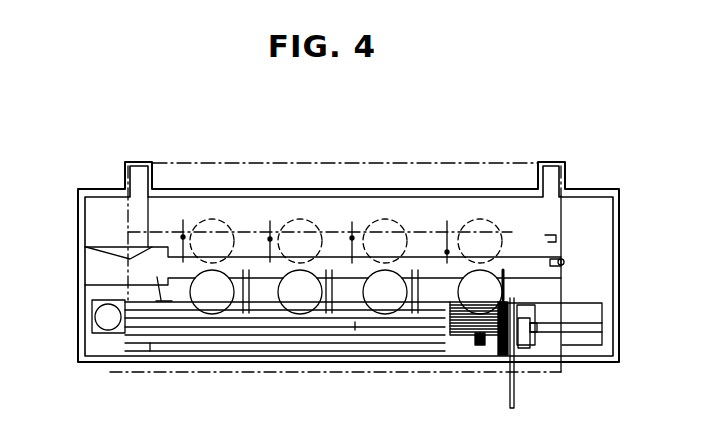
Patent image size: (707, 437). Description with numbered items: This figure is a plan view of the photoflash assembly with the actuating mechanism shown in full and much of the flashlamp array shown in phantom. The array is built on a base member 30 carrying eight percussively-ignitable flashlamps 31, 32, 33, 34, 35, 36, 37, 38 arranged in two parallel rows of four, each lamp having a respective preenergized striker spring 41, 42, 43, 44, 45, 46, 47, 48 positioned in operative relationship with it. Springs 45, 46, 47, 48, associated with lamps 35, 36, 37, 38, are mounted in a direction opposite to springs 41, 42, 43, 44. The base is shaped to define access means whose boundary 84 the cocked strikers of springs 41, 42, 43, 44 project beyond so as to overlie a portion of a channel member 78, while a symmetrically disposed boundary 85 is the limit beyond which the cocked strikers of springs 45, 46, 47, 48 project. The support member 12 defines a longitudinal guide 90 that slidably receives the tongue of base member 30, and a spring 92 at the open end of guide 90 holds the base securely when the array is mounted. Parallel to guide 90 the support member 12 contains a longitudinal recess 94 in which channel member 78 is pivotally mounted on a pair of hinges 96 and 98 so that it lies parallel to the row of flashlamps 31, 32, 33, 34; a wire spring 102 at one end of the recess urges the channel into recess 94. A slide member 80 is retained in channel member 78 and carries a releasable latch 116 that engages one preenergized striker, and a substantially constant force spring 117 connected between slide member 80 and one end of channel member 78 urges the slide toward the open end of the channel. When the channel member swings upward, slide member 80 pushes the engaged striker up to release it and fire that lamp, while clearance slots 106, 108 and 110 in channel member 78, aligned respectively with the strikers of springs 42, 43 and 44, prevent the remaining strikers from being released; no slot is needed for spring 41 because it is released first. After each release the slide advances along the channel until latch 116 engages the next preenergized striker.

The support member 12 is at (606, 269).
The base member 30 is at (482, 162).
The flashlamp 31 is at (452, 330).
The flashlamp 32 is at (362, 295).
The flashlamp 33 is at (302, 352).
The flashlamp 34 is at (197, 345).
The flashlamp 35 is at (226, 219).
The flashlamp 36 is at (312, 219).
The flashlamp 37 is at (398, 219).
The flashlamp 38 is at (495, 219).
The preenergized striker spring 41 is at (522, 284).
The preenergized striker spring 42 is at (426, 285).
The preenergized striker spring 43 is at (343, 285).
The preenergized striker spring 44 is at (252, 284).
The preenergized striker spring 45 is at (181, 238).
The preenergized striker spring 46 is at (268, 240).
The preenergized striker spring 47 is at (350, 238).
The preenergized striker spring 48 is at (445, 252).
The channel member 78 is at (173, 333).
The slide member 80 is at (483, 340).
The boundary 84 is at (157, 279).
The boundary 85 is at (538, 232).
The longitudinal guide 90 is at (563, 262).
The spring 92 is at (86, 249).
The longitudinal recess 94 is at (570, 305).
The hinge 96 is at (137, 343).
The hinge 98 is at (527, 345).
The wire spring 102 is at (580, 330).
The clearance slot 106 is at (418, 335).
The clearance slot 108 is at (327, 305).
The clearance slot 110 is at (250, 303).
The releasable latch 116 is at (515, 306).
The constant force spring 117 is at (108, 320).